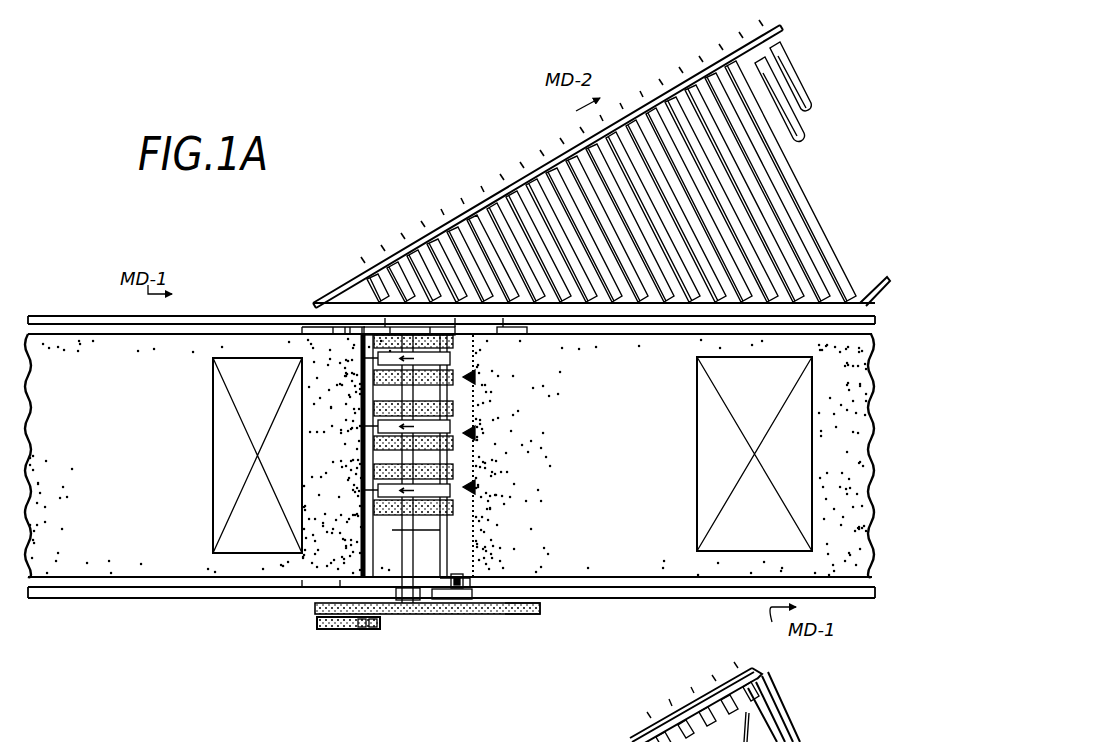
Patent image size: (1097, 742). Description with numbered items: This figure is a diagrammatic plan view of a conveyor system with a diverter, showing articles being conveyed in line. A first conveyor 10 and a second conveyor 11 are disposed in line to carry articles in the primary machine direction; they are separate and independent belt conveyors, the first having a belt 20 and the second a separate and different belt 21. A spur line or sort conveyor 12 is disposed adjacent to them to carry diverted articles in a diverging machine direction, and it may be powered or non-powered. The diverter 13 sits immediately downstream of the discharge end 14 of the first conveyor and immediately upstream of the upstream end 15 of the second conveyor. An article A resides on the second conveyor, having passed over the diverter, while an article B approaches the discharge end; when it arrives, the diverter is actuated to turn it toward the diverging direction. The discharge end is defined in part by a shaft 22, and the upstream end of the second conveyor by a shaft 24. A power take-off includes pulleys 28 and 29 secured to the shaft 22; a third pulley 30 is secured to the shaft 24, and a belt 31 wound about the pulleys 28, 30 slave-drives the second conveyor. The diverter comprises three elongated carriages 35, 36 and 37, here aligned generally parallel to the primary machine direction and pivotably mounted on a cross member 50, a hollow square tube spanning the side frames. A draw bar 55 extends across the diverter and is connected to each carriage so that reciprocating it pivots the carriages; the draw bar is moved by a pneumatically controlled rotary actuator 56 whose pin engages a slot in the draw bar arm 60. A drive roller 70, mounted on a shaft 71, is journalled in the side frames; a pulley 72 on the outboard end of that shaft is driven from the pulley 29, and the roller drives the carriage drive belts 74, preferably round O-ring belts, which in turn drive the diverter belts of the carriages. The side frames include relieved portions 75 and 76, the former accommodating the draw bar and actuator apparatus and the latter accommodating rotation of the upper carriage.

The first conveyor 10 is at (93, 627).
The second conveyor 11 is at (668, 608).
The spur line or sort conveyor 12 is at (676, 84).
The diverter 13 is at (413, 636).
The discharge end 14 is at (360, 553).
The upstream end 15 is at (478, 548).
The belt 20 is at (112, 477).
The belt 21 is at (668, 529).
The shaft 22 is at (302, 327).
The shaft 24 is at (528, 334).
The pulley 28 is at (318, 615).
The pulley 29 is at (330, 630).
The third pulley 30 is at (536, 615).
The belt 31 is at (426, 616).
The carriage 35 is at (476, 378).
The carriage 36 is at (478, 433).
The carriage 37 is at (476, 488).
The cross member 50 is at (406, 568).
The draw bar 55 is at (406, 531).
The rotary actuator 56 is at (478, 572).
The draw bar arm 60 is at (438, 603).
The drive roller 70 is at (364, 447).
The shaft 71 is at (376, 630).
The pulley 72 is at (381, 632).
The carriage drive belts 74 is at (364, 408).
The relieved portion 75 is at (447, 612).
The relieved portion 76 is at (400, 327).